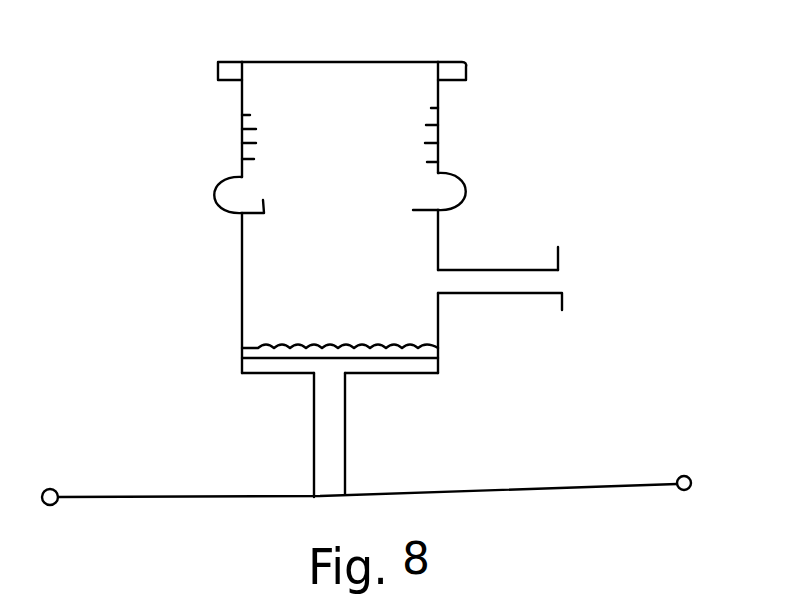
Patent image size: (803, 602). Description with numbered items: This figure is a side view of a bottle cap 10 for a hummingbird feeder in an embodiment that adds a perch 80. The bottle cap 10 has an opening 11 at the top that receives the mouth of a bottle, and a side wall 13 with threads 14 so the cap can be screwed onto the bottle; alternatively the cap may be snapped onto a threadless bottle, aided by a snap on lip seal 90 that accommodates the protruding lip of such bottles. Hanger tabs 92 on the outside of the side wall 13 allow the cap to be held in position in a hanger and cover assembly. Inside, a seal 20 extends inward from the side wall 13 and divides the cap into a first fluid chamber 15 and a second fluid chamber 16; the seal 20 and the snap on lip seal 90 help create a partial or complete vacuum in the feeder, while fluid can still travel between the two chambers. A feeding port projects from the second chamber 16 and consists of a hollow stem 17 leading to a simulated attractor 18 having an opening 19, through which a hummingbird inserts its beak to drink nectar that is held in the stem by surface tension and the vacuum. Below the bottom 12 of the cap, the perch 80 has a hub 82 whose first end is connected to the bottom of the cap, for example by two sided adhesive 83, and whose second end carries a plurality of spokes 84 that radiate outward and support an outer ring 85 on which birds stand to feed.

The bottle cap 10 is at (571, 165).
The opening 11 is at (353, 62).
The hanger tabs 92 is at (220, 63).
The side wall 13 is at (242, 131).
The threads 14 is at (440, 136).
The first fluid chamber 15 is at (326, 156).
The second fluid chamber 16 is at (329, 273).
The seal 20 is at (413, 211).
The snap on lip seal 90 is at (458, 192).
The hollow stem 17 is at (486, 269).
The simulated attractor 18 is at (560, 251).
The opening 19 is at (562, 283).
The bottom 12 is at (262, 350).
The two sided adhesive 83 is at (438, 351).
The perch 80 is at (486, 434).
The hub 82 is at (345, 404).
The spokes 84 is at (207, 496).
The outer ring 85 is at (47, 489).